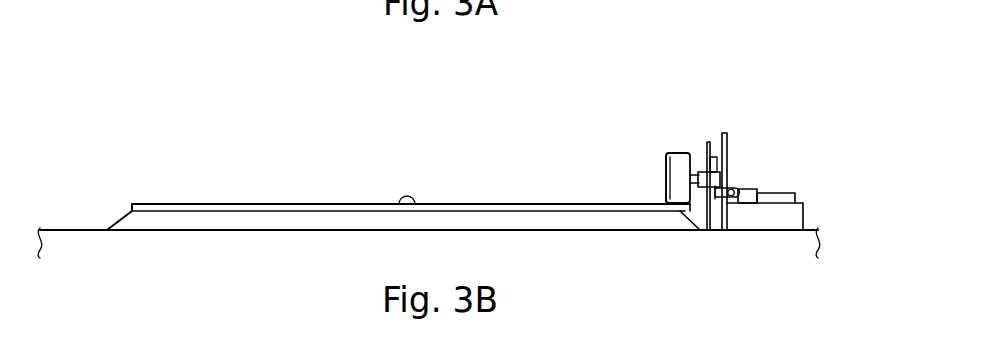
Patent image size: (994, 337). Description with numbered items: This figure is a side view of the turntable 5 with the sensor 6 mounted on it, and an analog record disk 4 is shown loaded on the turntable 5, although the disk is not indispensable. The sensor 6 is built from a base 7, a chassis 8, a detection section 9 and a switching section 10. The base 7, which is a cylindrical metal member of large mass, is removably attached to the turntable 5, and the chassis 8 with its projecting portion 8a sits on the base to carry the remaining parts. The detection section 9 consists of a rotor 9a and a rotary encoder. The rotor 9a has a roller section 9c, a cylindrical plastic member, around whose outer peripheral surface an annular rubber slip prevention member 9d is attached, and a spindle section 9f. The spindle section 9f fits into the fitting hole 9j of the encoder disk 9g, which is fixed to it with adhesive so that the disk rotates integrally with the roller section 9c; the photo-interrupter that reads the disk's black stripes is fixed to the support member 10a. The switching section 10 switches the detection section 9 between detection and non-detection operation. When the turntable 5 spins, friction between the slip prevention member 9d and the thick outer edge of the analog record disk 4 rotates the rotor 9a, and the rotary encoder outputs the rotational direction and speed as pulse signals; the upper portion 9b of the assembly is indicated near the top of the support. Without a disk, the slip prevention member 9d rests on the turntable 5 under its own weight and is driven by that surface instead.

The analog record disk 4 is at (513, 204).
The turntable 5 is at (530, 221).
The sensor 6 is at (829, 101).
The base 7 is at (778, 226).
The chassis 8 is at (790, 193).
The support block projection 8a is at (744, 189).
The detection section 9 is at (699, 75).
The rotor 9a is at (656, 186).
The rotary encoder 9b is at (715, 124).
The roller section 9c is at (666, 156).
The slip prevention member 9d is at (682, 153).
The spindle section 9f is at (700, 172).
The encoder disk 9g is at (714, 215).
The fitting hole 9j is at (697, 205).
The switching section 10 is at (736, 170).
The support member 10a is at (727, 136).